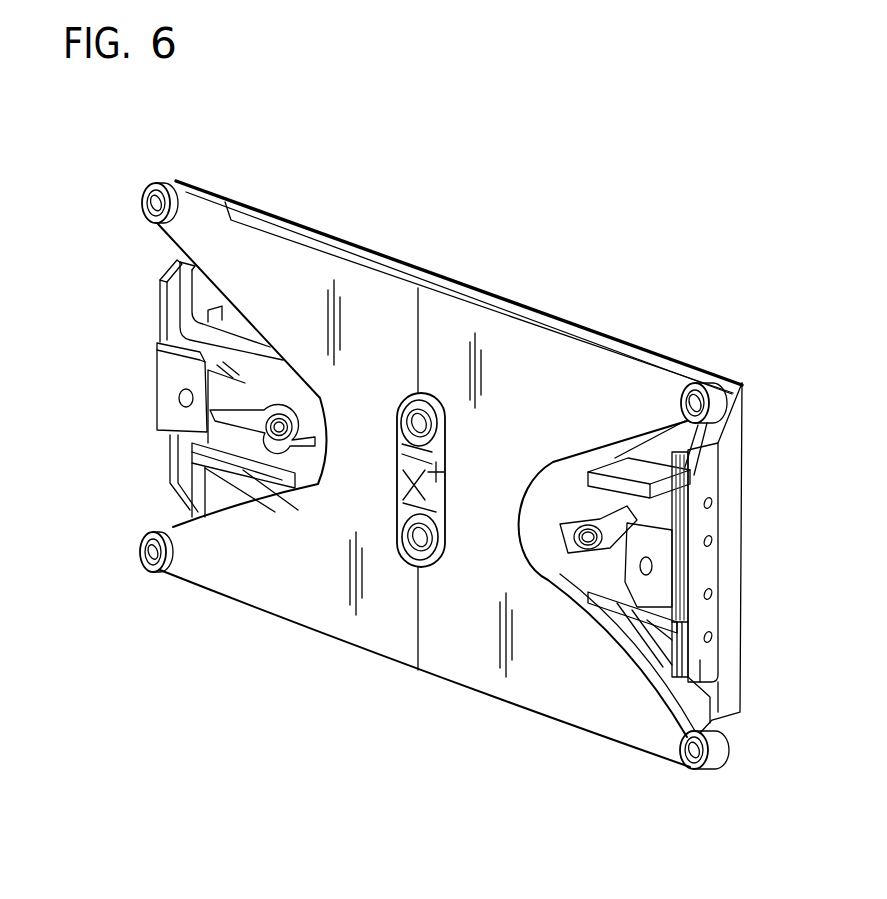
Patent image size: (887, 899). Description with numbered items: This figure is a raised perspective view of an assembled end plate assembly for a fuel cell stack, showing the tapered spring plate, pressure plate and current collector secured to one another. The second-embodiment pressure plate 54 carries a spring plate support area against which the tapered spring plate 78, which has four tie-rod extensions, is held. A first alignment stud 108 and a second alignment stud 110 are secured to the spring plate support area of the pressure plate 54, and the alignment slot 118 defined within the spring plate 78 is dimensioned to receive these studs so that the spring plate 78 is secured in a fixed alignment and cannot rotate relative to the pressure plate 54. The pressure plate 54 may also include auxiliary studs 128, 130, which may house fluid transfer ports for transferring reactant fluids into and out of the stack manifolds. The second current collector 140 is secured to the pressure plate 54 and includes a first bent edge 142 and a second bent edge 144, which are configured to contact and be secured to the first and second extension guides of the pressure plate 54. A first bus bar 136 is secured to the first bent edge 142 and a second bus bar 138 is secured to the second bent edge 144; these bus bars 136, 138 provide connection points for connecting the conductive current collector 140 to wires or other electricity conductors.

The pressure plate 54 is at (720, 450).
The tapered spring plate 78 is at (583, 735).
The first alignment stud 108 is at (421, 540).
The second alignment stud 110 is at (423, 425).
The alignment slot 118 is at (416, 481).
The auxiliary stud 128 is at (286, 353).
The auxiliary stud 130 is at (607, 452).
The first bus bar 136 is at (162, 397).
The second bus bar 138 is at (708, 652).
The second current collector 140 is at (748, 378).
The first bent edge 142 is at (158, 268).
The second bent edge 144 is at (732, 538).